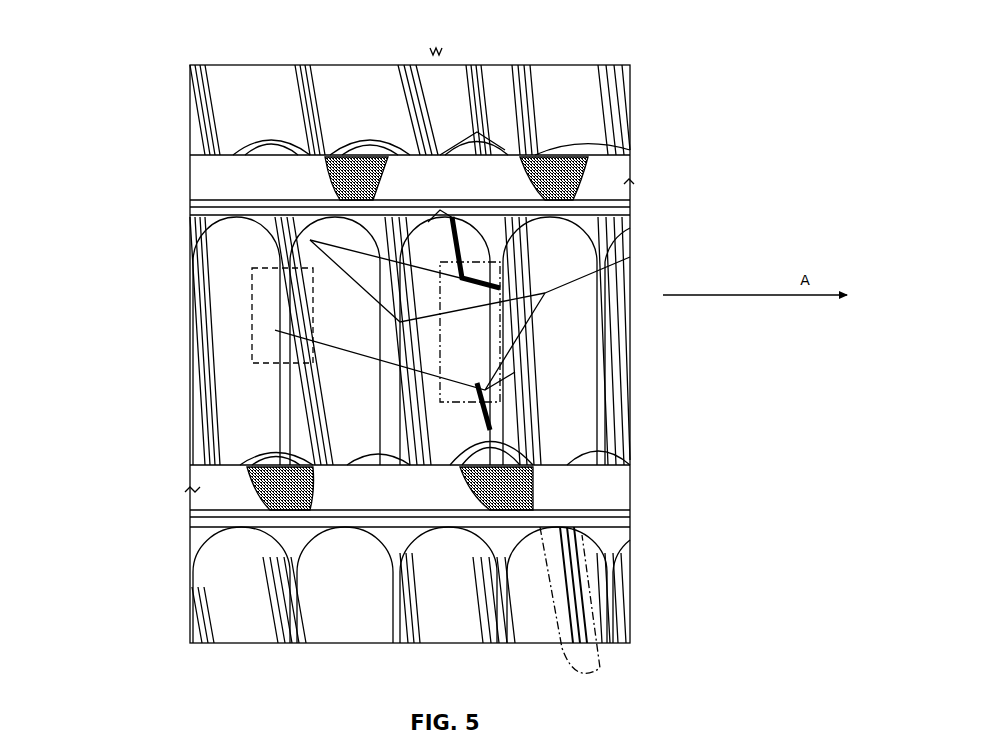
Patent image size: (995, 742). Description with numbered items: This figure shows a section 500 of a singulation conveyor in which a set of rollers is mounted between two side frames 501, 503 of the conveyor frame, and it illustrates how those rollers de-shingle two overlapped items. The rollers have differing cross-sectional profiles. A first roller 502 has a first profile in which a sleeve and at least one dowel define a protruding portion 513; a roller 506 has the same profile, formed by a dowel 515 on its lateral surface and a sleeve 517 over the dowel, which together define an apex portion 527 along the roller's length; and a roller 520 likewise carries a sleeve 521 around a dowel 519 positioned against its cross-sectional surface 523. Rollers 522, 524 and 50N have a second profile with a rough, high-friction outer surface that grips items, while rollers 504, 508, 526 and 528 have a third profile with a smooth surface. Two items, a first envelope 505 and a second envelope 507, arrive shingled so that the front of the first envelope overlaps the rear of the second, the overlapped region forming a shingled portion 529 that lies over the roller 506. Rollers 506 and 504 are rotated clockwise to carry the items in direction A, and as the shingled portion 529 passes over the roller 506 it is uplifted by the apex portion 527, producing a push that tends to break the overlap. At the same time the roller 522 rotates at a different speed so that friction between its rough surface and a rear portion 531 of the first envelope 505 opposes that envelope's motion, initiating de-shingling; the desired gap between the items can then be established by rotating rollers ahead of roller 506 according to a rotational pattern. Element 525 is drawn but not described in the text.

The section of the singulation conveyor 500 is at (122, 72).
The roller 50N is at (253, 88).
The side frame 501 is at (202, 177).
The first roller 502 is at (600, 583).
The side frame 503 is at (193, 498).
The roller 504 is at (330, 375).
The first envelope 505 is at (360, 327).
The roller 506 is at (500, 409).
The second envelope 507 is at (575, 327).
The roller 508 is at (515, 372).
The portion 513 is at (592, 607).
The dowel 515 is at (490, 437).
The sleeve 517 is at (490, 428).
The dowel 519 is at (482, 112).
The roller 520 is at (442, 92).
The sleeve 521 is at (477, 132).
The roller 522 is at (270, 437).
The cross-sectional surface 523 is at (457, 145).
The roller 524 is at (362, 623).
The outlined region 525 is at (575, 607).
The roller 526 is at (247, 627).
The apex portion 527 is at (453, 250).
The roller 528 is at (472, 628).
The shingled portion 529 is at (500, 288).
The rear portion 531 is at (255, 268).